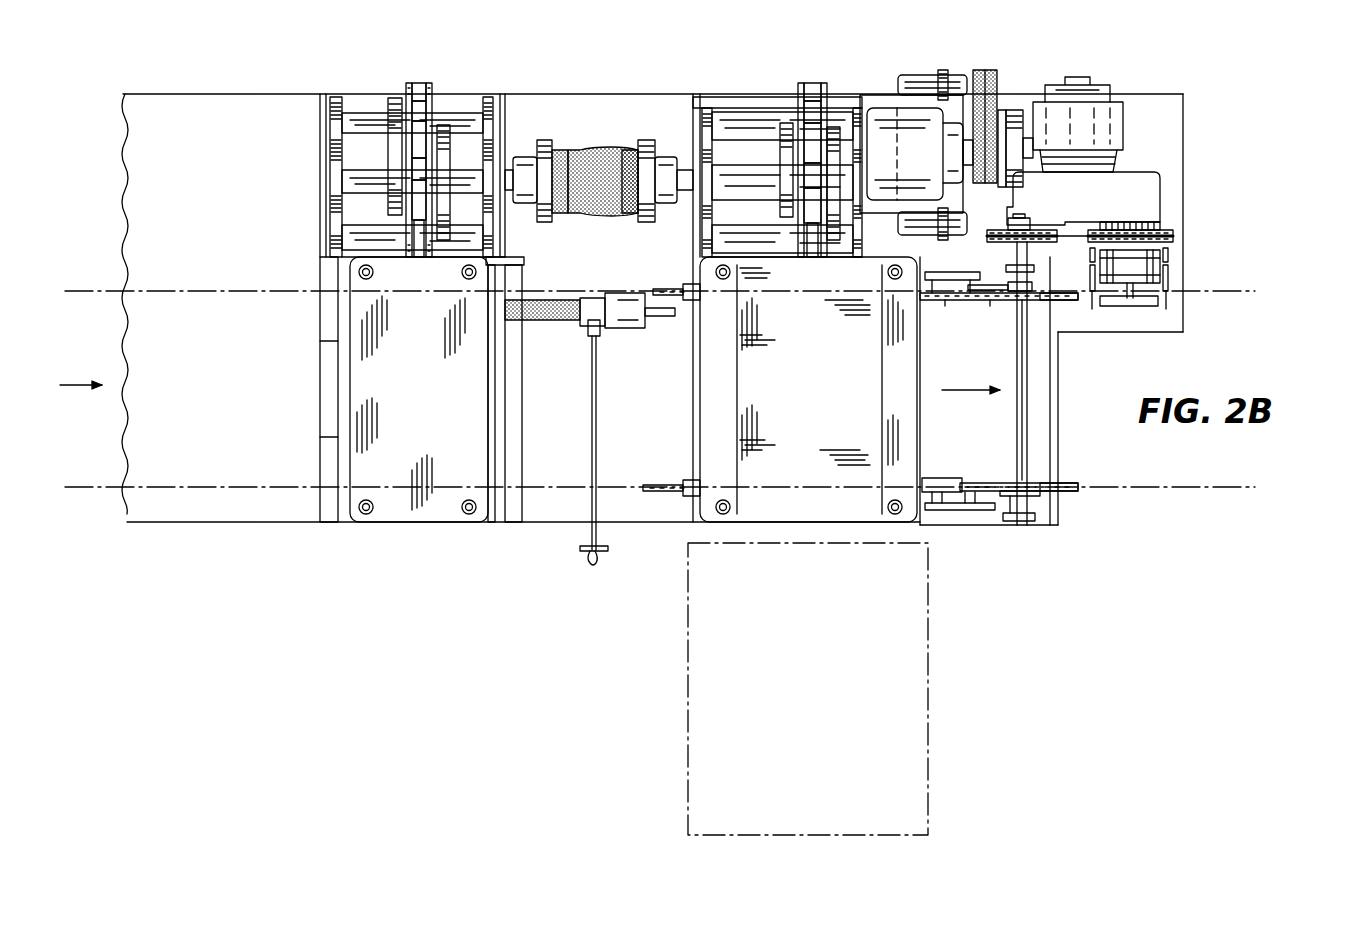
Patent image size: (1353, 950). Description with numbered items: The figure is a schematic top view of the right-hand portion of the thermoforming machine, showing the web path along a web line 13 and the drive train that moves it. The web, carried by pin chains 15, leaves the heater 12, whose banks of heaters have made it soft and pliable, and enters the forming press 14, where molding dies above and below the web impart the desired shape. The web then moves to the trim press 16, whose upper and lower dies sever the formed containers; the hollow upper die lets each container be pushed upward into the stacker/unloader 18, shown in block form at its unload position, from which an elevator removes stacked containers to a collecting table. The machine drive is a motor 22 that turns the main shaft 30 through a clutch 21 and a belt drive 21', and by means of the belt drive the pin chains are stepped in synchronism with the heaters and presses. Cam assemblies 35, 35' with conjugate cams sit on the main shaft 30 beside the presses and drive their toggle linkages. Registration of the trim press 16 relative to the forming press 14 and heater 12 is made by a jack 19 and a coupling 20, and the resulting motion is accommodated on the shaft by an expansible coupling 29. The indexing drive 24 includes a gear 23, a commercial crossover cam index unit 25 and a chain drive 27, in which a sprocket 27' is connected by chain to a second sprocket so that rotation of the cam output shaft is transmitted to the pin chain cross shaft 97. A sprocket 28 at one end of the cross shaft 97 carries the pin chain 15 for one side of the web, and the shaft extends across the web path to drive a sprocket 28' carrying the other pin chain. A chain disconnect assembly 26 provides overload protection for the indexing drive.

The heater unit 12 is at (203, 397).
The web line 13 is at (290, 490).
The forming press 14 is at (427, 308).
The pin chains 15 is at (1074, 301).
The trim press 16 is at (780, 308).
The stacker/unloader 18 is at (808, 689).
The jack 19 is at (585, 332).
The coupling 20 is at (316, 427).
The clutch 21 is at (1025, 154).
The belt drive 21' is at (1001, 109).
The motor 22 is at (878, 114).
The gear 23 is at (1118, 130).
The indexing drive 24 is at (1205, 230).
The crossover cam index unit 25 is at (1160, 196).
The chain disconnect assembly 26 is at (1180, 277).
The chain drive 27 is at (1080, 244).
The sprocket 27' is at (1003, 243).
The sprocket 28 is at (999, 297).
The sprocket 28' is at (1000, 482).
The expansible coupling 29 is at (600, 145).
The main shaft 30 is at (366, 180).
The conjugate cam assembly 35 is at (419, 148).
The conjugate cam assembly 35' is at (810, 150).
The cross shaft 97 is at (1016, 426).